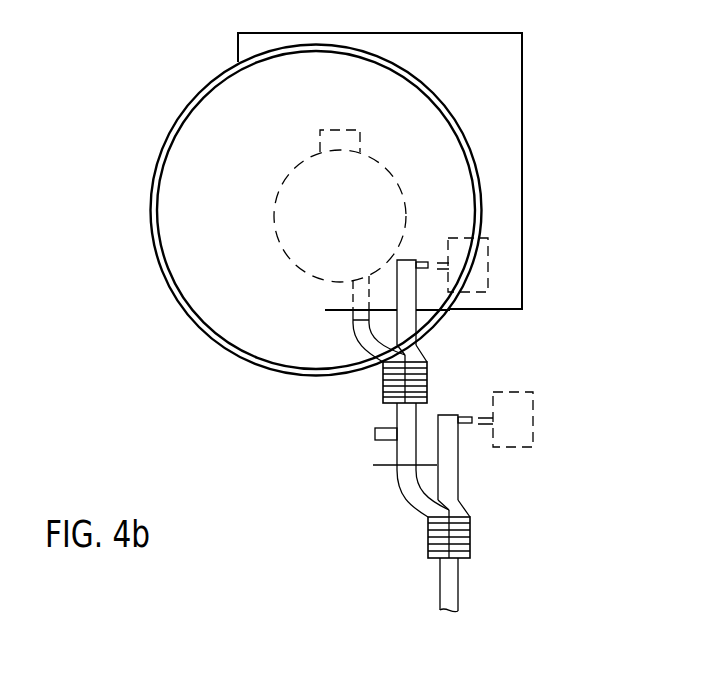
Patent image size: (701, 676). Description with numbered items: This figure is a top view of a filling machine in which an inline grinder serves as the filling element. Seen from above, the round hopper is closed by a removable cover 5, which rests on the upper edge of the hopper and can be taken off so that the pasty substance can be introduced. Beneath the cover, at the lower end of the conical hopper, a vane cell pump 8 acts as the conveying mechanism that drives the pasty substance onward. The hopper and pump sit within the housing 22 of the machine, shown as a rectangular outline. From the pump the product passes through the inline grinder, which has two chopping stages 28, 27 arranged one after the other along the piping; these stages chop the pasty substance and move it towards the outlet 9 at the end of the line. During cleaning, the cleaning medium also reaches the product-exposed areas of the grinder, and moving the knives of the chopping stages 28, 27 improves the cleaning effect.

The cover 5 is at (177, 306).
The vane cell pump 8 is at (396, 183).
The housing 22 is at (522, 207).
The chopping stage 27 is at (470, 541).
The chopping stage 28 is at (383, 397).
The outlet 9 is at (458, 606).